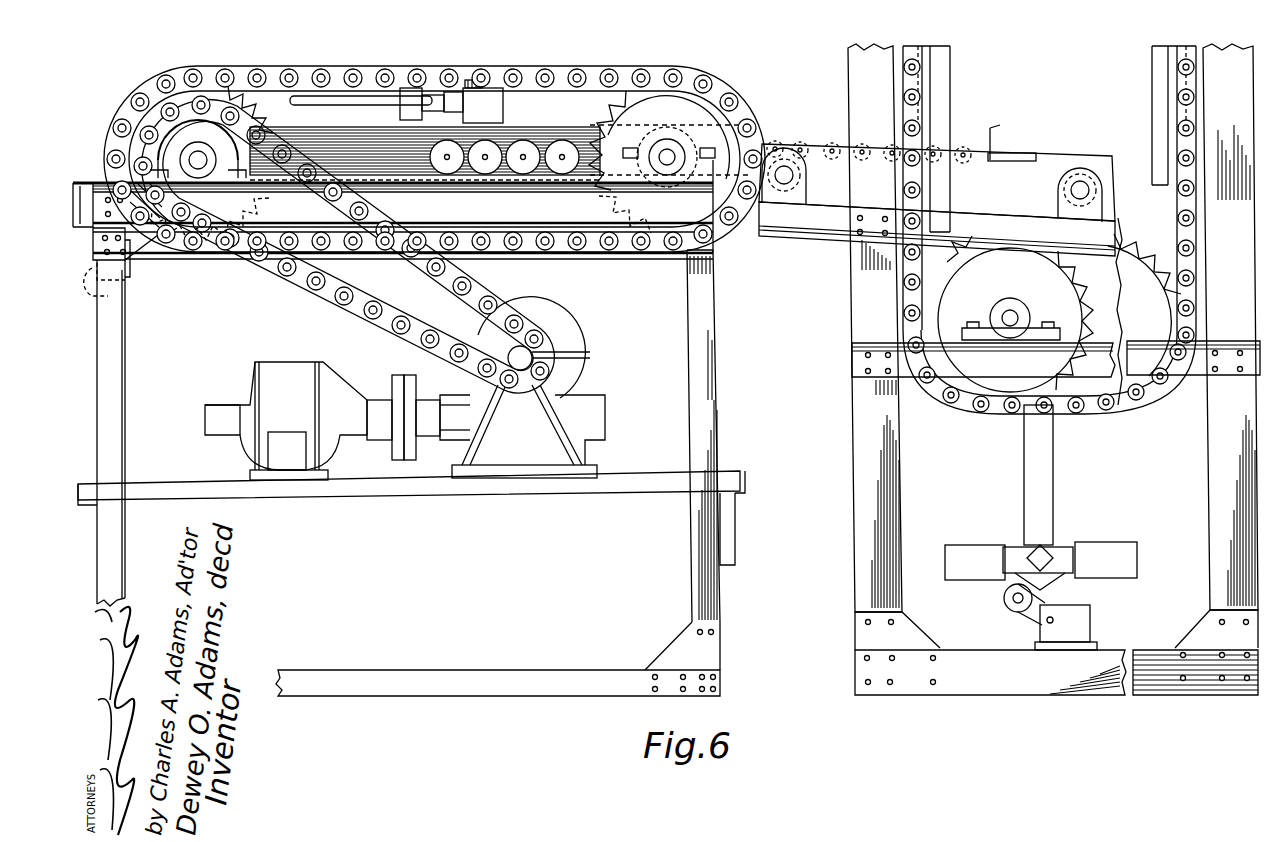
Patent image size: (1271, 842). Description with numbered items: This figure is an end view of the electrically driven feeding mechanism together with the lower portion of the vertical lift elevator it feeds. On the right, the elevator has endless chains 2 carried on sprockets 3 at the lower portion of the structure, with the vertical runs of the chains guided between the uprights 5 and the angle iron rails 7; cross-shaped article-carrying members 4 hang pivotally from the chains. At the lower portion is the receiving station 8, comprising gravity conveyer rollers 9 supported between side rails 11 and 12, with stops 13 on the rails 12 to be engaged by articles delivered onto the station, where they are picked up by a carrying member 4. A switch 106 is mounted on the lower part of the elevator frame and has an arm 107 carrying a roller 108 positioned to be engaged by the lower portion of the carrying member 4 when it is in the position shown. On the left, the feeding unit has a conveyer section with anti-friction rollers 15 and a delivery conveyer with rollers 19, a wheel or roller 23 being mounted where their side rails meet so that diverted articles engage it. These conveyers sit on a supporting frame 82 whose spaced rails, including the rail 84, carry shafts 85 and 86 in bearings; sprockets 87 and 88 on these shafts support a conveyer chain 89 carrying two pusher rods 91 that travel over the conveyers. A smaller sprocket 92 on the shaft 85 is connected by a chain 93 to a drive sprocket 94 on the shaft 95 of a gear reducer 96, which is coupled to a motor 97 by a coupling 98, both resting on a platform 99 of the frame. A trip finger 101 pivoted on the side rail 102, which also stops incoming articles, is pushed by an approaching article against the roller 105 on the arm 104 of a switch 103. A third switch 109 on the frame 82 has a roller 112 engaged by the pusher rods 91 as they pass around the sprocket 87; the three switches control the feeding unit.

The endless chain 2 is at (922, 145).
The sprocket 3 is at (1122, 228).
The article-carrying member 4 is at (1053, 512).
The upright 5 is at (856, 103).
The angle iron rail 7 is at (952, 92).
The receiving station 8 is at (1015, 150).
The gravity conveyer roller 9 is at (794, 140).
The side rail 11 is at (818, 150).
The side rail 12 is at (1043, 162).
The stop 13 is at (992, 126).
The anti-friction roller 15 is at (510, 180).
The anti-friction roller 19 is at (400, 178).
The wheel or roller 23 is at (470, 80).
The supporting frame 82 is at (126, 412).
The rail 84 is at (567, 212).
The shaft 85 is at (198, 158).
The shaft 86 is at (668, 150).
The sprocket 87 is at (257, 100).
The sprocket 88 is at (612, 95).
The conveyer chain 89 is at (428, 85).
The pusher rod 91 is at (112, 150).
The smaller sprocket 92 is at (180, 130).
The chain 93 is at (358, 312).
The drive sprocket 94 is at (510, 356).
The shaft 95 is at (524, 356).
The gear reducer 96 is at (583, 403).
The motor 97 is at (243, 377).
The coupling 98 is at (395, 378).
The platform 99 is at (418, 490).
The trip finger 101 is at (333, 96).
The side rail 102 is at (550, 128).
The switch 103 is at (495, 90).
The arm 104 is at (455, 92).
The roller 105 is at (420, 108).
The switch 106 is at (1090, 627).
The arm 107 is at (1032, 626).
The roller 108 is at (1010, 612).
The switch 109 is at (97, 279).
The roller 112 is at (100, 182).